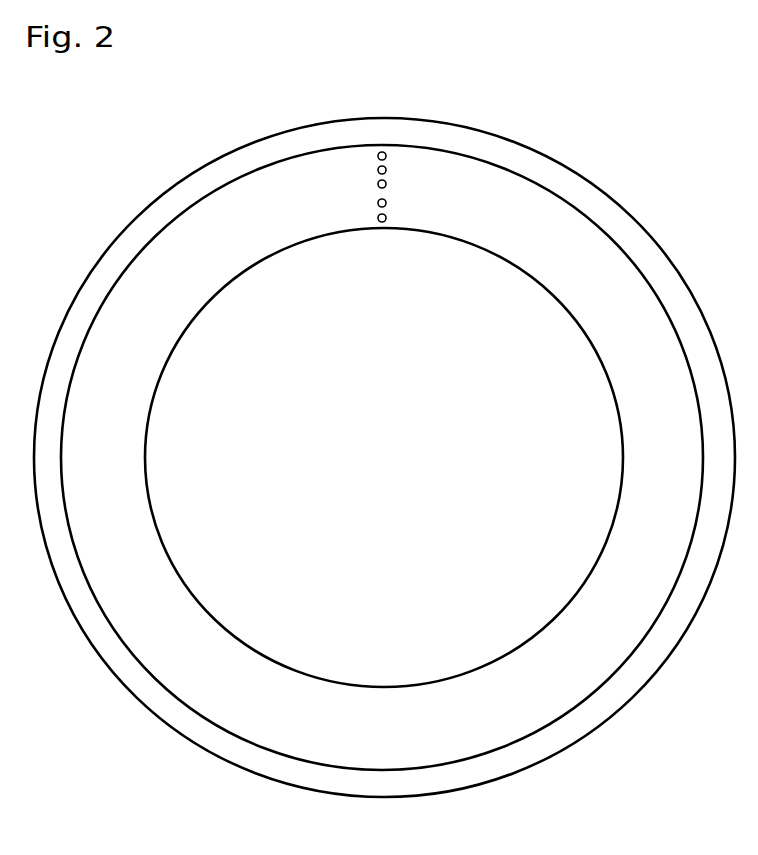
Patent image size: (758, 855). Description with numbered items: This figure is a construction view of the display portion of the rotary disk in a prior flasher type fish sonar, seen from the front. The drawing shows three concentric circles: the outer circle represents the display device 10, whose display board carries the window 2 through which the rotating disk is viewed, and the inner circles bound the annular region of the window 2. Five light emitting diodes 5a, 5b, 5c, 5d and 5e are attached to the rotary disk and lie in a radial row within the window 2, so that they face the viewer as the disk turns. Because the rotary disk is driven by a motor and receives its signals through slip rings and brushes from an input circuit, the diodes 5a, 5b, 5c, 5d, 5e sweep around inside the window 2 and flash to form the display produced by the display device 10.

The display device 10 is at (233, 158).
The window 2 is at (178, 262).
The light emitting diode 5a is at (382, 152).
The light emitting diode 5b is at (377, 172).
The light emitting diode 5c is at (387, 184).
The light emitting diode 5d is at (377, 205).
The light emitting diode 5e is at (387, 218).